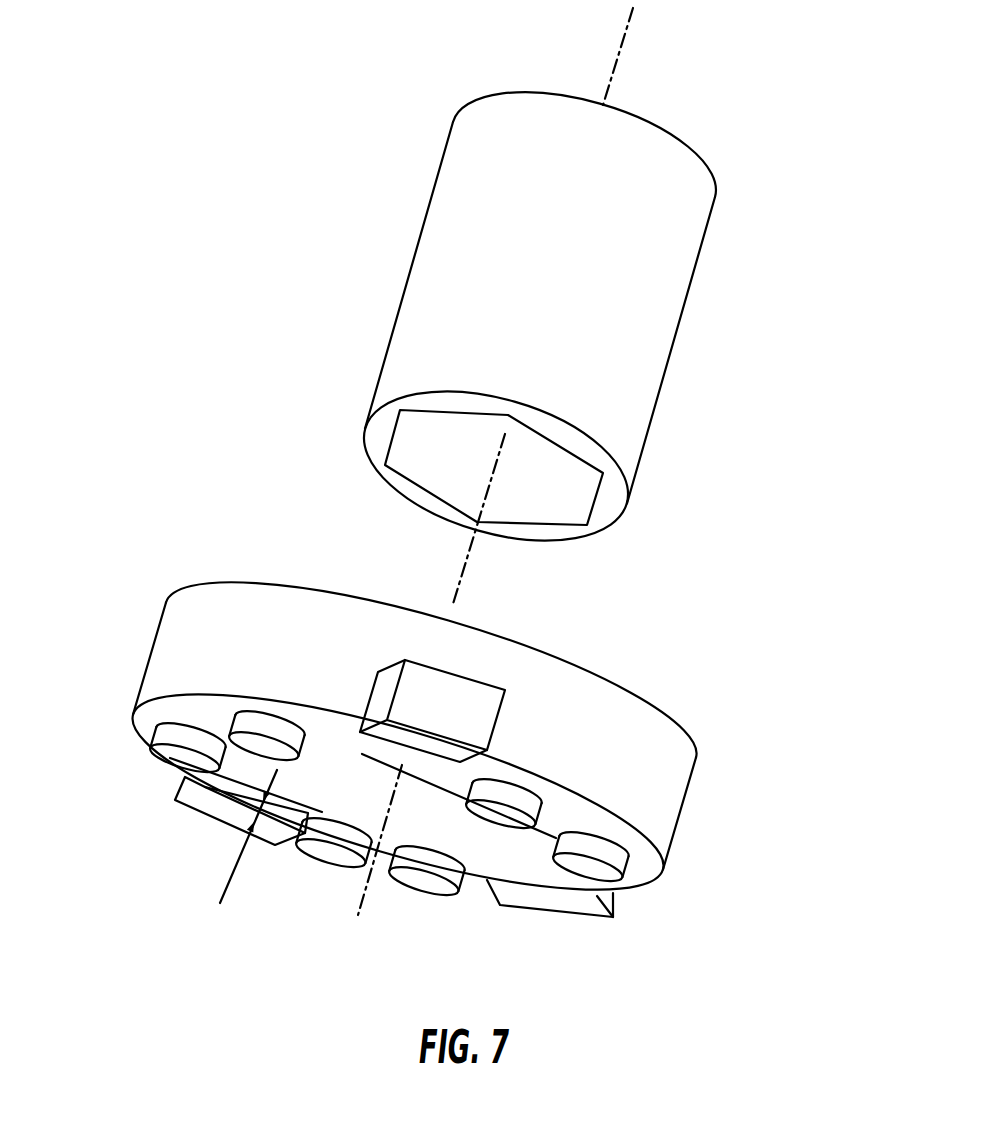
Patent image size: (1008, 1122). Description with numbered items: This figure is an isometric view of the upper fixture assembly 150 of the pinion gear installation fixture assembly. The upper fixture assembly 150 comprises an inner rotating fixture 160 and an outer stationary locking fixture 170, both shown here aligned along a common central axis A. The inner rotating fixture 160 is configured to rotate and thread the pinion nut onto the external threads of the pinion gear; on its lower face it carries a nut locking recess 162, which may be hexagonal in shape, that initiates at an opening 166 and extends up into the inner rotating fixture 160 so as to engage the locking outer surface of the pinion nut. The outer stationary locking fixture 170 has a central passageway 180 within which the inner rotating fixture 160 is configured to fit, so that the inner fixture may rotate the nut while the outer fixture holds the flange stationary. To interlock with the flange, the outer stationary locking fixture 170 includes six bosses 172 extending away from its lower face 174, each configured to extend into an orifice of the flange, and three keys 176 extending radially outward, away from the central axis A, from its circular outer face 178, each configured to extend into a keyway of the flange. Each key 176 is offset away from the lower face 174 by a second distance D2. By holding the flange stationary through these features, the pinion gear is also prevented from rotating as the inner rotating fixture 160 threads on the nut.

The upper fixture assembly 150 is at (775, 352).
The inner rotating fixture 160 is at (422, 222).
The nut locking recess 162 is at (466, 450).
The opening 166 is at (388, 452).
The outer stationary locking fixture 170 is at (150, 560).
The boss 172 is at (178, 757).
The lower face 174 is at (150, 714).
The key 176 is at (208, 818).
The outer face 178 is at (158, 650).
The central passageway 180 is at (362, 788).
The central axis A is at (453, 598).
The second distance D2 is at (243, 863).